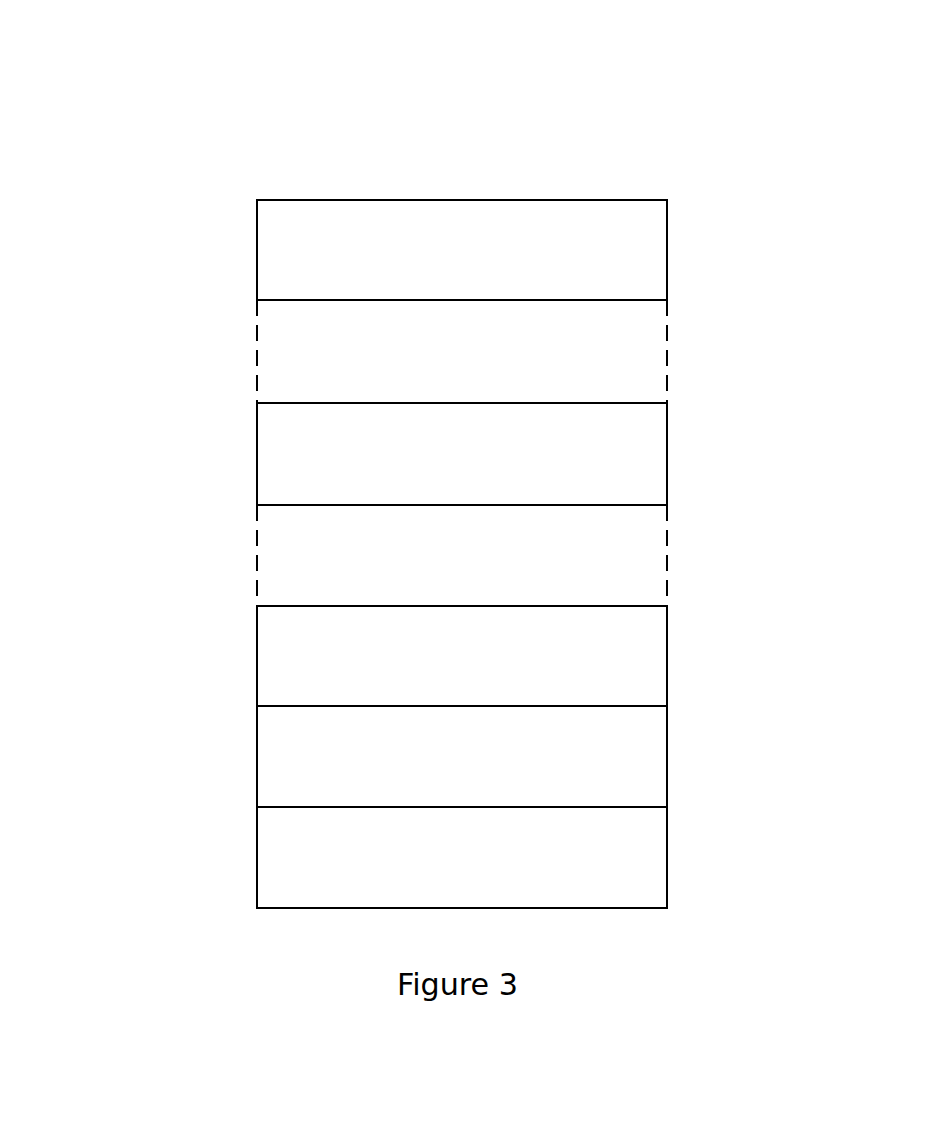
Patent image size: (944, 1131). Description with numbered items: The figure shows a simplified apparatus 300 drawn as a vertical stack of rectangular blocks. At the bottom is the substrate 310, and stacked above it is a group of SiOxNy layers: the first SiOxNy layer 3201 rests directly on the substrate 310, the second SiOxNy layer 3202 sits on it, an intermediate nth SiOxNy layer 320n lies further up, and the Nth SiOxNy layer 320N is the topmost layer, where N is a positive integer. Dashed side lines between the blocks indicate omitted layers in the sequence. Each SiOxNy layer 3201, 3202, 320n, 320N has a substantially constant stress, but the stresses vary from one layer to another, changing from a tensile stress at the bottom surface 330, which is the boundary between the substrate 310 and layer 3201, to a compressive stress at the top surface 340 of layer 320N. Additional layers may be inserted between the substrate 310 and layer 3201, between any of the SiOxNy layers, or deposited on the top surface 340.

The apparatus 300 is at (194, 92).
The substrate 310 is at (462, 857).
The SiOxNy layer 3201 is at (462, 756).
The SiOxNy layer 3202 is at (462, 656).
The SiOxNy layer 320n is at (462, 454).
The SiOxNy layer 320N is at (462, 250).
The bottom surface 330 is at (622, 807).
The top surface 340 is at (602, 198).